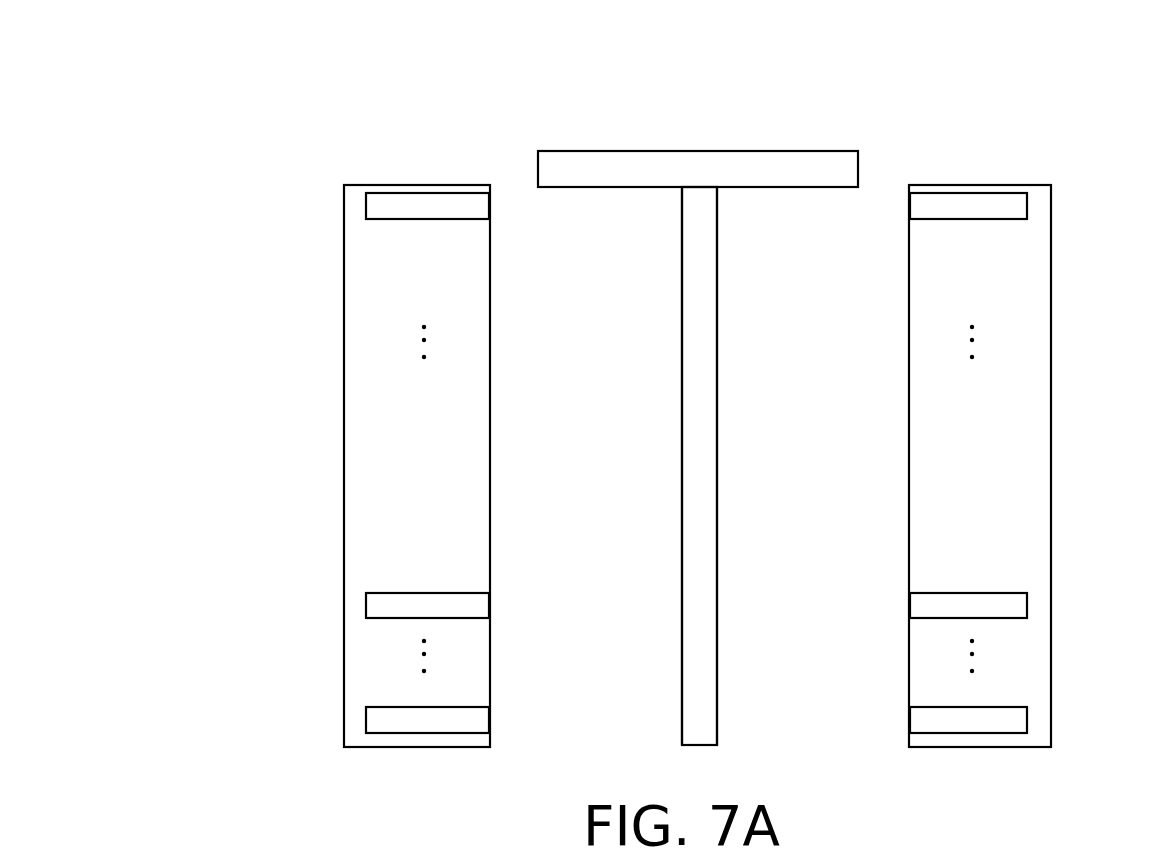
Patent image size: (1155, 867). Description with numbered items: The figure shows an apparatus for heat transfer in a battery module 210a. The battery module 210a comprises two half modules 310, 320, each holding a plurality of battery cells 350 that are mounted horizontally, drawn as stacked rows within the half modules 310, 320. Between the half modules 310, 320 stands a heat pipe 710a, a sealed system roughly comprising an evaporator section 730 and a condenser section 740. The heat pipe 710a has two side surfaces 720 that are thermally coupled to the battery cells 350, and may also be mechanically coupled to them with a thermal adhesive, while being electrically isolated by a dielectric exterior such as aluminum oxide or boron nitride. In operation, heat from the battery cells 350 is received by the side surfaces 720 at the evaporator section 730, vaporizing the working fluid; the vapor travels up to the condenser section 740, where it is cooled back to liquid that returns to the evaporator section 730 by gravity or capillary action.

The battery module 210a is at (212, 42).
The half module 310 is at (344, 185).
The half module 320 is at (1051, 185).
The battery cells 350 is at (490, 607).
The heat pipe 710a is at (858, 151).
The condenser section 740 is at (725, 178).
The evaporator section 730 is at (700, 341).
The side surfaces 720 is at (682, 508).